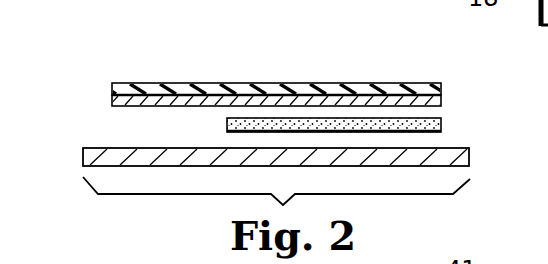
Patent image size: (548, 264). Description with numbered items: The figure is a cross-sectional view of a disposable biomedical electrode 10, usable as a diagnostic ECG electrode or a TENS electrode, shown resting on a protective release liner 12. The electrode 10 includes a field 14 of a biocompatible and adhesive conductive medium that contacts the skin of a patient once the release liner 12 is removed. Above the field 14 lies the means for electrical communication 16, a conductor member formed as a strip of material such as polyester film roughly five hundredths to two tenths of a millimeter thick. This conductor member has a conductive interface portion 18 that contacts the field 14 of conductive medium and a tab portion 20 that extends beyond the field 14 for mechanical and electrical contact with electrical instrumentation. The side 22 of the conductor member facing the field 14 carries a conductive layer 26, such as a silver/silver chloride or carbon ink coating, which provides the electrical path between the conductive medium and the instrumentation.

The electrode 10 is at (274, 94).
The release liner 12 is at (97, 154).
The field of conductive medium 14 is at (226, 121).
The means for electrical communication 16 is at (112, 90).
The conductive interface portion 18 is at (442, 73).
The tab portion 20 is at (218, 64).
The side 22 is at (112, 99).
The conductive layer 26 is at (140, 106).